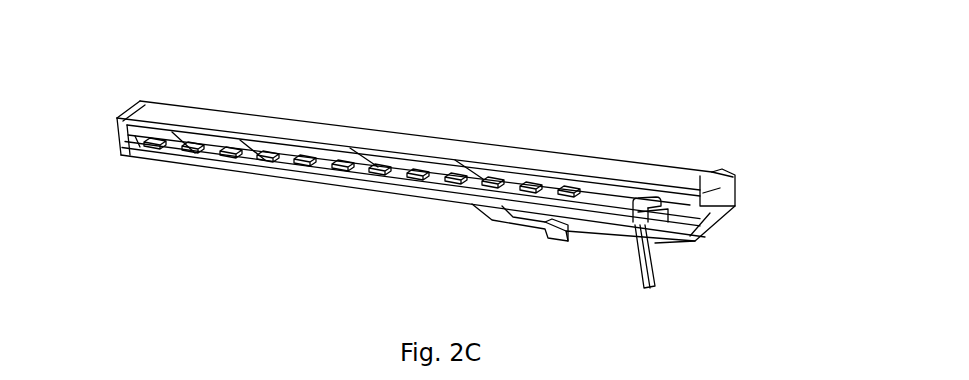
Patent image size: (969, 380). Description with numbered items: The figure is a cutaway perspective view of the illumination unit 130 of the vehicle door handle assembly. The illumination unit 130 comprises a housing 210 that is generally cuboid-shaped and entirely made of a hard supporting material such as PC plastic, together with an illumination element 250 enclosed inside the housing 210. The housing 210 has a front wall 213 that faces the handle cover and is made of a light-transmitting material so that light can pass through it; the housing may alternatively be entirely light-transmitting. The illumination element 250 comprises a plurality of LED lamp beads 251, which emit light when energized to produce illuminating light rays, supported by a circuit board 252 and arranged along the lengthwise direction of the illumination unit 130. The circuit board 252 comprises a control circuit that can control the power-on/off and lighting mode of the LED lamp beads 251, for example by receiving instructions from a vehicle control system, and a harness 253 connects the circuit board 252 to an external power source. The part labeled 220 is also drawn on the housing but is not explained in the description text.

The illumination unit 130 is at (694, 119).
The housing 210 is at (721, 168).
The front wall 213 is at (393, 151).
The top cover 220 is at (462, 142).
The illumination element 250 is at (381, 186).
The LED lamp beads 251 is at (291, 163).
The circuit board 252 is at (236, 158).
The harness 253 is at (638, 252).